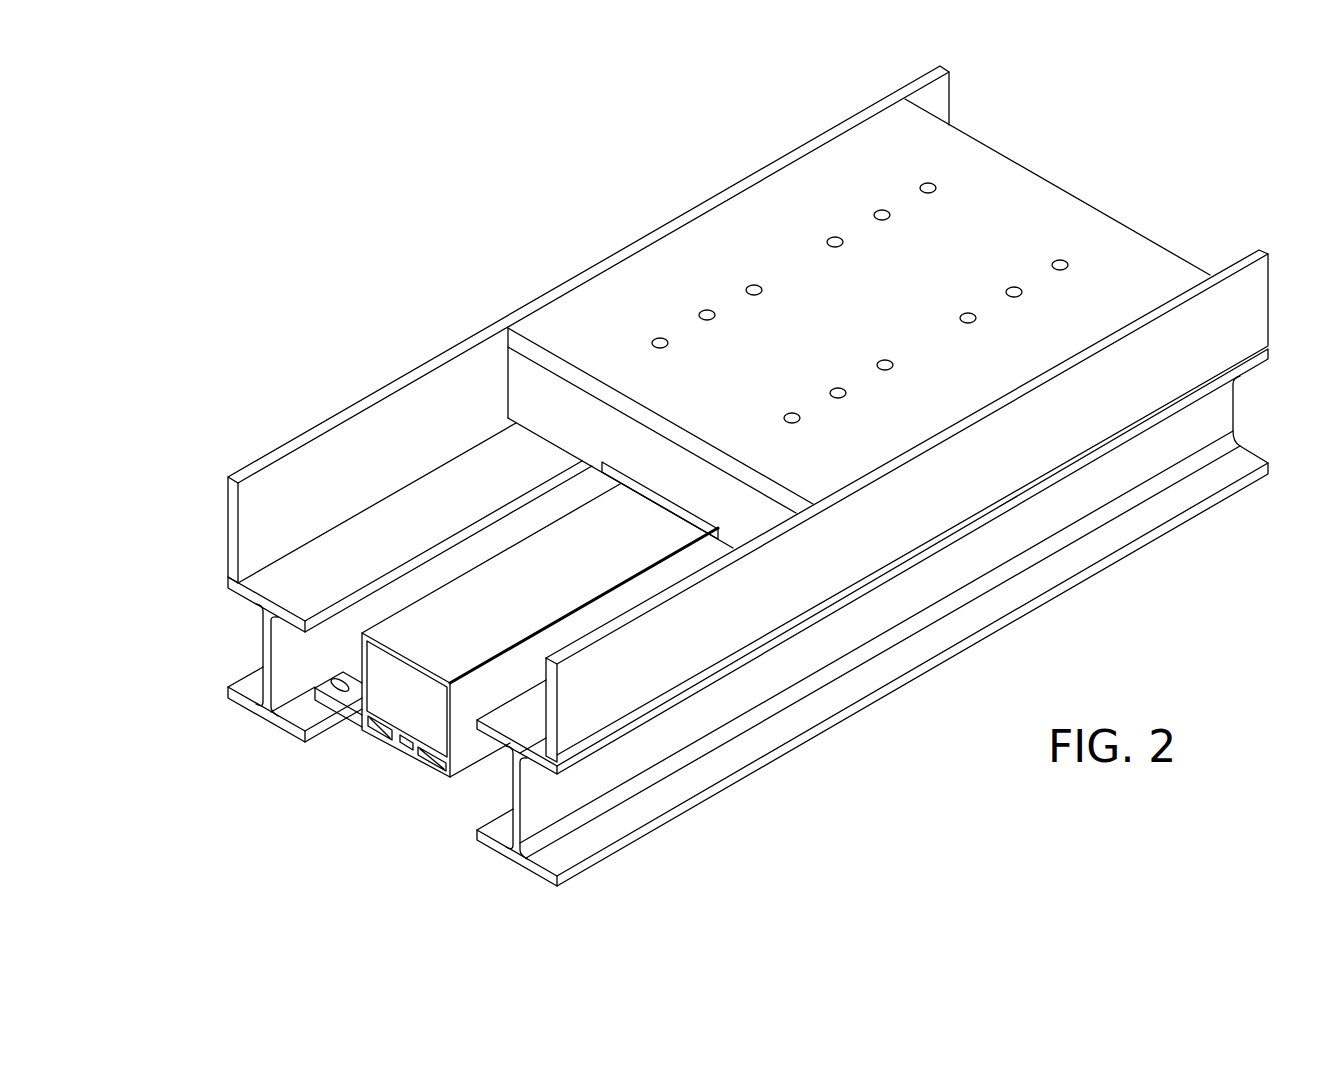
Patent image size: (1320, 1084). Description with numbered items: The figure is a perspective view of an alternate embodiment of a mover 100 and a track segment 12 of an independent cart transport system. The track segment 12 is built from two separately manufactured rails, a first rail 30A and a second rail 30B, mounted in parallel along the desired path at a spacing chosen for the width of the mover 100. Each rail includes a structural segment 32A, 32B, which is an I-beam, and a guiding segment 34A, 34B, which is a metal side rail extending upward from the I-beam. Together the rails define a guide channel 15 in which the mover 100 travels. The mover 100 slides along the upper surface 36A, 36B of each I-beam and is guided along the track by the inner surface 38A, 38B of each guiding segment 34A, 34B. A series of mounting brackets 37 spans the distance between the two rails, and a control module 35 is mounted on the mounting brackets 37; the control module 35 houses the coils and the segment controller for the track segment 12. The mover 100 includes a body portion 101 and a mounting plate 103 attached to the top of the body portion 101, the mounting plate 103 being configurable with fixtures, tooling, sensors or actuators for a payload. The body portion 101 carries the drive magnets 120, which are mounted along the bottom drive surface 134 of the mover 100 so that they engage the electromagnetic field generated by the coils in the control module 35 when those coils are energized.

The track segment 12 is at (382, 284).
The mover 100 is at (1073, 167).
The mounting plate 103 is at (858, 309).
The body portion 101 is at (681, 472).
The drive magnets 120 is at (650, 492).
The drive surface 134 is at (527, 436).
The first rail 30A is at (274, 737).
The second rail 30B is at (491, 869).
The structural segment 32A is at (262, 706).
The structural segment 32B is at (540, 877).
The guiding segment 34A is at (228, 521).
The guiding segment 34B is at (636, 687).
The upper surface 36A is at (354, 564).
The upper surface 36B is at (505, 725).
The inner surface 38A is at (346, 482).
The inner surface 38B is at (541, 711).
The guide channel 15 is at (258, 524).
The control module 35 is at (403, 709).
The mounting brackets 37 is at (352, 735).